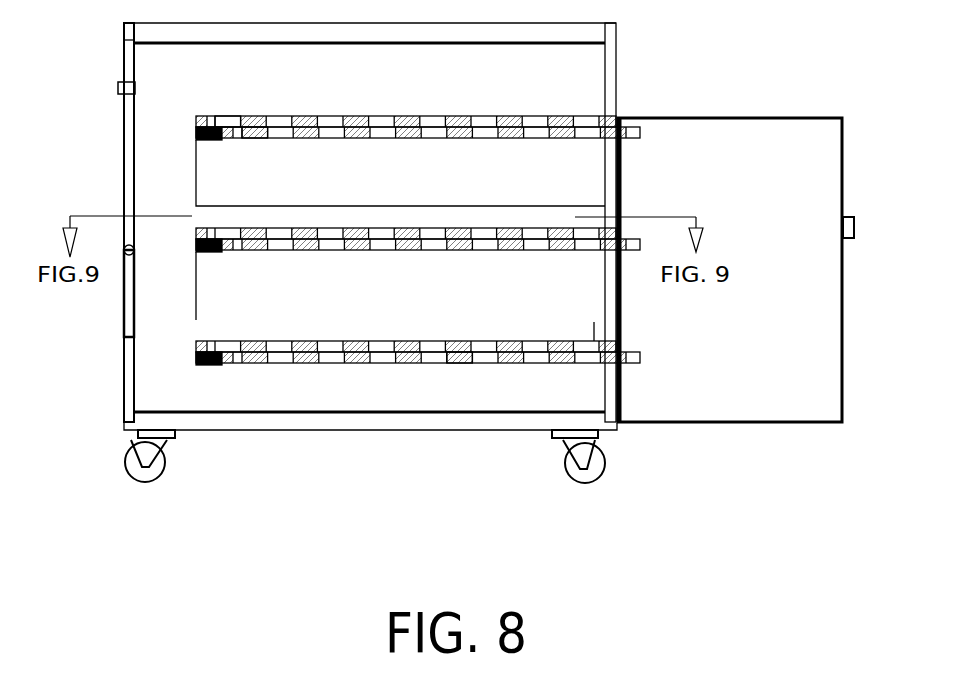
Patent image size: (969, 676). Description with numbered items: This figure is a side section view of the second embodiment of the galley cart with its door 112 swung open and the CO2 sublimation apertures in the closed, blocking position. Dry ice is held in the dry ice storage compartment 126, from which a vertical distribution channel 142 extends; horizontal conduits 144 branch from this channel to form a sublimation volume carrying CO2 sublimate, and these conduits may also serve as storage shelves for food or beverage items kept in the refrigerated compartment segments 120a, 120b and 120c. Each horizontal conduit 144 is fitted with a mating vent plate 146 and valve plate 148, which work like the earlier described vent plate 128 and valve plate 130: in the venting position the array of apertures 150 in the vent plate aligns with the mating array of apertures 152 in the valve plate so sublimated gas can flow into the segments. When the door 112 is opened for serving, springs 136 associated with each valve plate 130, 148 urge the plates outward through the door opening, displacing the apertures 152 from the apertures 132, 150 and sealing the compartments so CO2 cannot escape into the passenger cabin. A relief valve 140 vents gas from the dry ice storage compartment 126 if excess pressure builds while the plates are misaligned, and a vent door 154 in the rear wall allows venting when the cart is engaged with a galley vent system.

The door 112 is at (726, 388).
The refrigerated compartment segment 120a is at (525, 186).
The refrigerated compartment segment 120b is at (537, 304).
The refrigerated compartment segment 120c is at (544, 404).
The dry ice storage compartment 126 is at (555, 100).
The vent plate 128 is at (352, 122).
The valve plate 130 is at (378, 132).
The array of apertures 132 is at (230, 122).
The spring 136 is at (201, 140).
The relief valve 140 is at (126, 88).
The vertical distribution channel 142 is at (170, 171).
The horizontal conduit 144 is at (349, 205).
The vent plate 146 is at (463, 228).
The valve plate 148 is at (328, 252).
The array of apertures 150 is at (226, 236).
The array of apertures 152 is at (457, 356).
The vent door 154 is at (128, 303).